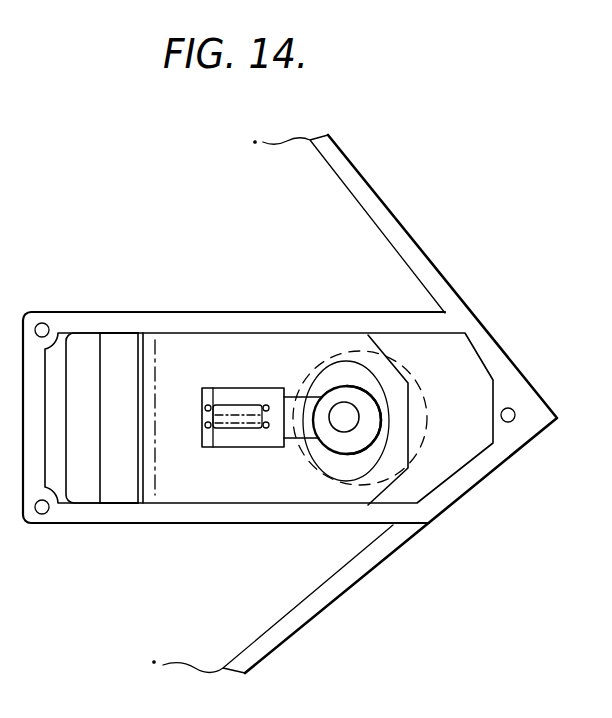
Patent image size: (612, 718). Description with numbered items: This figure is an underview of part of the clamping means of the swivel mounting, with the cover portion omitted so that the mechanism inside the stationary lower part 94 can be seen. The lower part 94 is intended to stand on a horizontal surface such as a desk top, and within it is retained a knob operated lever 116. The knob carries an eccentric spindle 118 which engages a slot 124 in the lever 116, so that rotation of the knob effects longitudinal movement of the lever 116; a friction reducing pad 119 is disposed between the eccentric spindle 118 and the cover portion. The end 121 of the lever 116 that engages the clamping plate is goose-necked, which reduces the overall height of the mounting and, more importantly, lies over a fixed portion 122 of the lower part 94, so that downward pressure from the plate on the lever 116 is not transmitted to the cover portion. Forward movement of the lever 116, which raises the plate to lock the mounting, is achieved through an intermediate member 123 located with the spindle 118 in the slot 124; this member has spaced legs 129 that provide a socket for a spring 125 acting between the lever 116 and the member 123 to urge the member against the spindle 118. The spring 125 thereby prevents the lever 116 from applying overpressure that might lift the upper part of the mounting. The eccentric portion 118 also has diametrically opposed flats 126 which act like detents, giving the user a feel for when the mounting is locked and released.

The stationary lower part 94 is at (287, 631).
The knob operated lever 116 is at (158, 501).
The eccentric spindle 118 is at (325, 394).
The friction reducing pad 119 is at (345, 410).
The goose-necked end of the lever 121 is at (80, 501).
The fixed portion of the lower part 122 is at (110, 501).
The intermediate member 123 is at (300, 425).
The slot 124 is at (205, 390).
The spring 125 is at (222, 425).
The diametrically opposed flats 126 is at (382, 426).
The spaced legs 129 is at (245, 393).